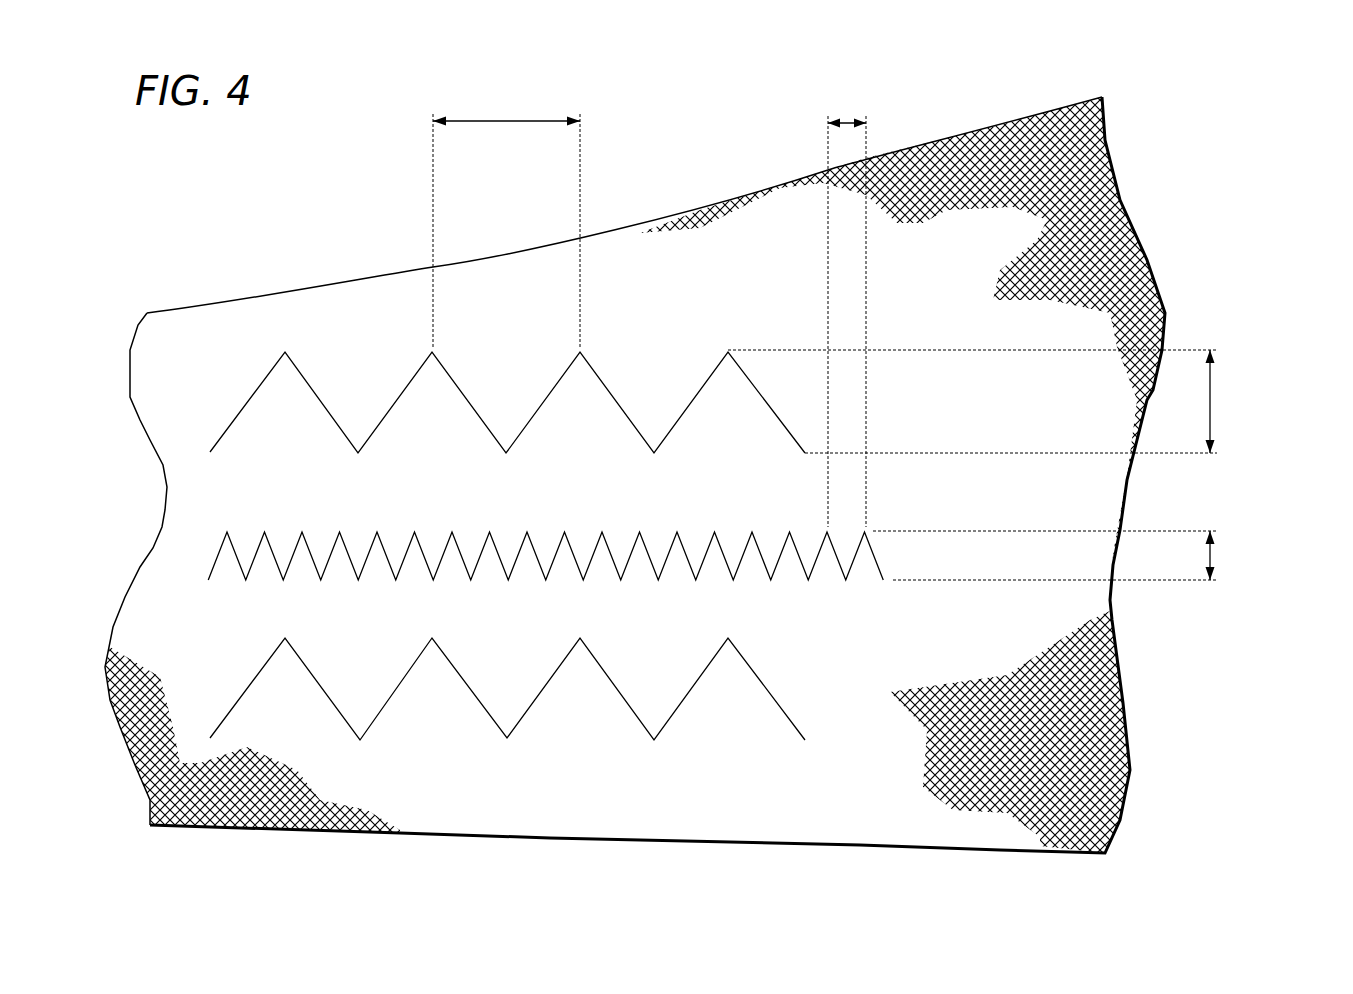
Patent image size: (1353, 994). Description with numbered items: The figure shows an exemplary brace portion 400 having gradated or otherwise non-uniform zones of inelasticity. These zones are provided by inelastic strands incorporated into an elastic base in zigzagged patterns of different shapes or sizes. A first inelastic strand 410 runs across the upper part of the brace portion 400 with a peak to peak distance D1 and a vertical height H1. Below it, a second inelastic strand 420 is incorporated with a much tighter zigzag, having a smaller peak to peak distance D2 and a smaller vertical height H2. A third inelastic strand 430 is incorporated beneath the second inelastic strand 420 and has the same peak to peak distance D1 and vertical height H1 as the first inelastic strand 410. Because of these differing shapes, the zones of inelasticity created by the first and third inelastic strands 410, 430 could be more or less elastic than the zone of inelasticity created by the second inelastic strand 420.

The brace portion 400 is at (306, 232).
The first inelastic strand 410 is at (237, 418).
The second inelastic strand 420 is at (217, 548).
The third inelastic strand 430 is at (237, 700).
The peak to peak distance D1 is at (508, 118).
The peak to peak distance D2 is at (847, 123).
The vertical height H1 is at (1210, 407).
The vertical height H2 is at (1210, 553).